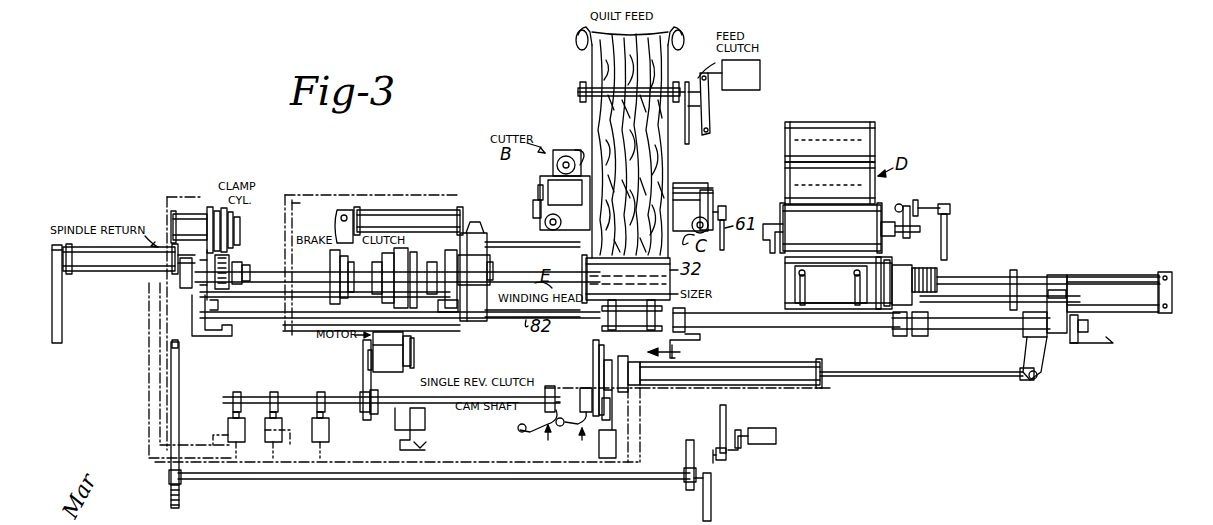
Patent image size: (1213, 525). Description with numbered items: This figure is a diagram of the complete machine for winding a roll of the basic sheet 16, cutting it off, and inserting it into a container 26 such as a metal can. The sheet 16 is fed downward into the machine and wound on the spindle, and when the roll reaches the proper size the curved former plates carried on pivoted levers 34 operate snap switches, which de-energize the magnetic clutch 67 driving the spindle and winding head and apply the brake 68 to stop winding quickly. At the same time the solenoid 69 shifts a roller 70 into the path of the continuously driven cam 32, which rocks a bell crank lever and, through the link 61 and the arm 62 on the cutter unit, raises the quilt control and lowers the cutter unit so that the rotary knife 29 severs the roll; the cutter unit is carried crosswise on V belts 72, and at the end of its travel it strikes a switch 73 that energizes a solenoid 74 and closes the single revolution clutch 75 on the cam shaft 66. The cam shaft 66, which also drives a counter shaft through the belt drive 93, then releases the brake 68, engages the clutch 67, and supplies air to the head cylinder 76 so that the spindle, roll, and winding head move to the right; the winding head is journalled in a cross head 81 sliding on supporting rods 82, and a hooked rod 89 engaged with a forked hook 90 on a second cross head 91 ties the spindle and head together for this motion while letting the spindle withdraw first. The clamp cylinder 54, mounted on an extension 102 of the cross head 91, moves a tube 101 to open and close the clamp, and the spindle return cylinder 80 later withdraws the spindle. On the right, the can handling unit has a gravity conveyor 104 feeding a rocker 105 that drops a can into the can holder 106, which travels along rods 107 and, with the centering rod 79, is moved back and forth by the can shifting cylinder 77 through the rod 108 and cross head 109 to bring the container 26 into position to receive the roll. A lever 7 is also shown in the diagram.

The lever / rod 7 is at (660, 167).
The basic sheet 16 is at (592, 126).
The container 26 is at (785, 262).
The rotary knife 29 is at (576, 155).
The cam 32 is at (711, 506).
The levers 34 is at (608, 322).
The clamp cylinder 54 is at (190, 213).
The link 61 is at (727, 411).
The arm 62 is at (727, 210).
The cam shaft 66 is at (568, 394).
The magnetic clutch 67 is at (388, 258).
The brake 68 is at (330, 257).
The solenoid 69 is at (777, 437).
The roller 70 is at (722, 462).
The V belts 72 is at (688, 206).
The switch 73 is at (716, 196).
The solenoid 74 is at (434, 428).
The single revolution clutch 75 is at (374, 428).
The head cylinder 76 is at (400, 208).
The can shifting cylinder 77 is at (778, 368).
The centering rod 79 is at (995, 277).
The spindle return cylinder 80 is at (70, 273).
The cross head 81 is at (482, 320).
The supporting rods 82 is at (508, 247).
The hooked rod 89 is at (446, 330).
The forked hook 90 is at (200, 323).
The cross head 91 is at (178, 292).
The belt drive 93 is at (593, 347).
The tube 101 is at (246, 282).
The extension 102 is at (230, 263).
The gravity conveyor 104 is at (876, 145).
The rocker 105 is at (882, 208).
The can holder 106 is at (798, 290).
The rods 107 is at (870, 322).
The rod 108 is at (1000, 378).
The cross head 109 is at (1038, 355).